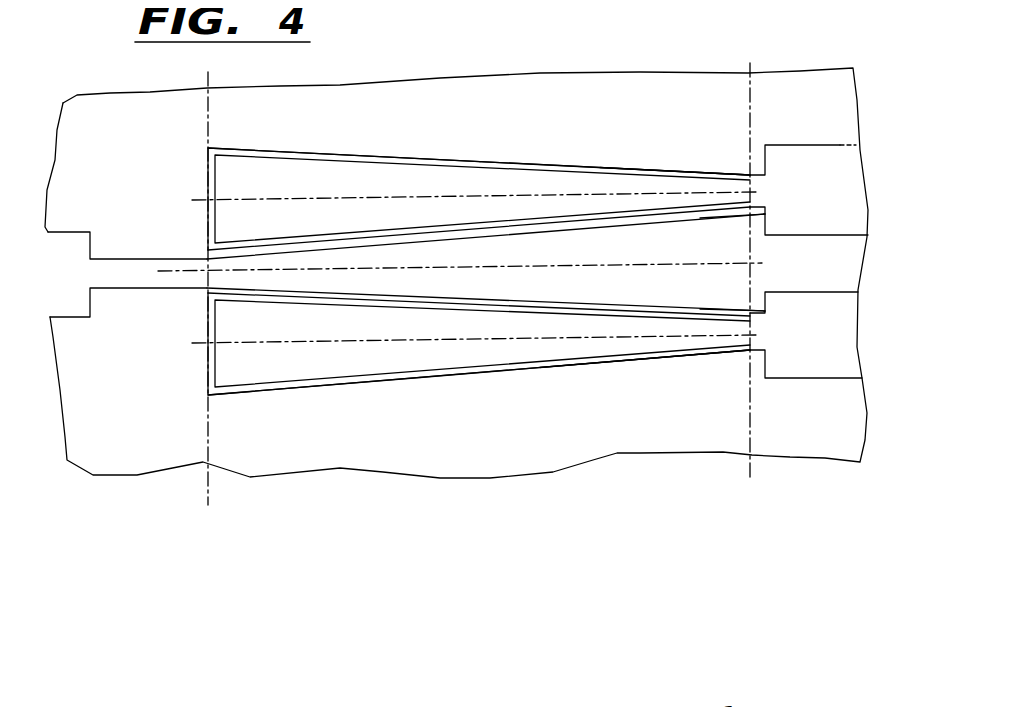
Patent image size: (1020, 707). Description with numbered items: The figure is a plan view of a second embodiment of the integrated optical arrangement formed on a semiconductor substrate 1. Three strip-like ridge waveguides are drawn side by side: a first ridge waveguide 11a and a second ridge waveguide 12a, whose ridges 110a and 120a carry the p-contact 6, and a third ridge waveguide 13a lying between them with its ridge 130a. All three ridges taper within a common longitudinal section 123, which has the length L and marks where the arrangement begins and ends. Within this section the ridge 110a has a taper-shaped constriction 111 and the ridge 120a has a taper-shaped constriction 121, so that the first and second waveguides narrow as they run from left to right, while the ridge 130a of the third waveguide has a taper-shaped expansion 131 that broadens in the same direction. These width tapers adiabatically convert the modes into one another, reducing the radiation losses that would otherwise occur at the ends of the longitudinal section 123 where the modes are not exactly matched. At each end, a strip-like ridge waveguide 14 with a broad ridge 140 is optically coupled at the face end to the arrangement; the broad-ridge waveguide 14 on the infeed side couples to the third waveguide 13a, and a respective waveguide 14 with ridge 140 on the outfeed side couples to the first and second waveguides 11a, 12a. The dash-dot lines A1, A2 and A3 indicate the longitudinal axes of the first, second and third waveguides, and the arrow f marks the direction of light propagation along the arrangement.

The substrate 1 is at (607, 70).
The p-contact 6 is at (290, 182).
The first ridge waveguide 11a is at (625, 160).
The second ridge waveguide 12a is at (552, 378).
The third ridge waveguide 13a is at (657, 320).
The strip-like ridge waveguide 14 is at (805, 138).
The ridge of the first ridge waveguide 110a is at (553, 163).
The taper-shaped constriction 111 is at (342, 156).
The ridge of the second ridge waveguide 120a is at (485, 371).
The taper-shaped constriction 121 is at (300, 385).
The longitudinal section 123 is at (481, 306).
The ridge of the third ridge waveguide 130a is at (710, 312).
The taper-shaped expansion 131 is at (735, 244).
The ridge of the ridge waveguide 140 is at (71, 231).
The axis of first tube A1 is at (408, 197).
The axis of second tube A2 is at (412, 341).
The central axis A3 is at (567, 263).
The direction of flow f is at (437, 257).